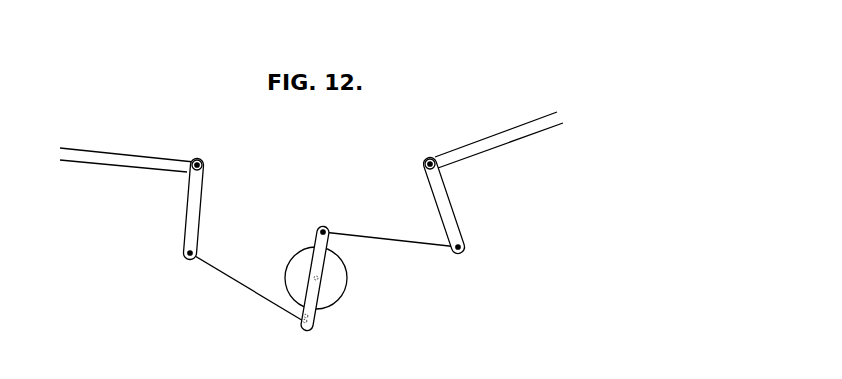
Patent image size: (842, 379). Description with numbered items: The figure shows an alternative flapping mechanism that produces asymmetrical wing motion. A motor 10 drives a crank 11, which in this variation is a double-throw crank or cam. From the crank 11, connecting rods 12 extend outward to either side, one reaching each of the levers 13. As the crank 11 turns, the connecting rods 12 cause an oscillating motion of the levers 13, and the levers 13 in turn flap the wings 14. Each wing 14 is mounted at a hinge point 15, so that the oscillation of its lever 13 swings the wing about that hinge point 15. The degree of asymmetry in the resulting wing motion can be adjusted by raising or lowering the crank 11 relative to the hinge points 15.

The motor 10 is at (348, 292).
The crank 11 is at (317, 242).
The connecting rods 12 is at (243, 287).
The levers 13 is at (187, 220).
The wings 14 is at (119, 153).
The hinge points 15 is at (200, 162).